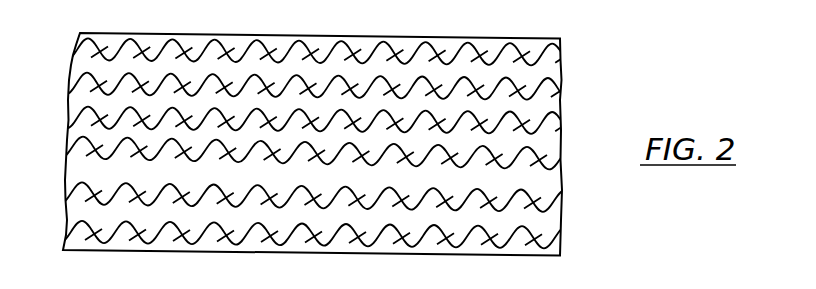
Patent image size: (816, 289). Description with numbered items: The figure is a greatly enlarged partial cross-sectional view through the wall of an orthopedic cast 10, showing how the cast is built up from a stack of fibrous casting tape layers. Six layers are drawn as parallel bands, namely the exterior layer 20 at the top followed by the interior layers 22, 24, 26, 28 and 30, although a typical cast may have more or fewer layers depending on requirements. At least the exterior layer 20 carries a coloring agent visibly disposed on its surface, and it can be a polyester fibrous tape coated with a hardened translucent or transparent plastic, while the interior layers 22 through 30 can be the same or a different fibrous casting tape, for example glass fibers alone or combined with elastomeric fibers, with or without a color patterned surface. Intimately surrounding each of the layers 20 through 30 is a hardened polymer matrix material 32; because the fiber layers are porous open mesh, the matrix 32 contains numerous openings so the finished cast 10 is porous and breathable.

The cast 10 is at (303, 147).
The exterior layer 20 is at (560, 63).
The layer 22 is at (560, 98).
The layer 24 is at (560, 135).
The layer 26 is at (560, 165).
The layer 28 is at (560, 205).
The layer 30 is at (560, 237).
The hardened polymer matrix material 32 is at (209, 60).